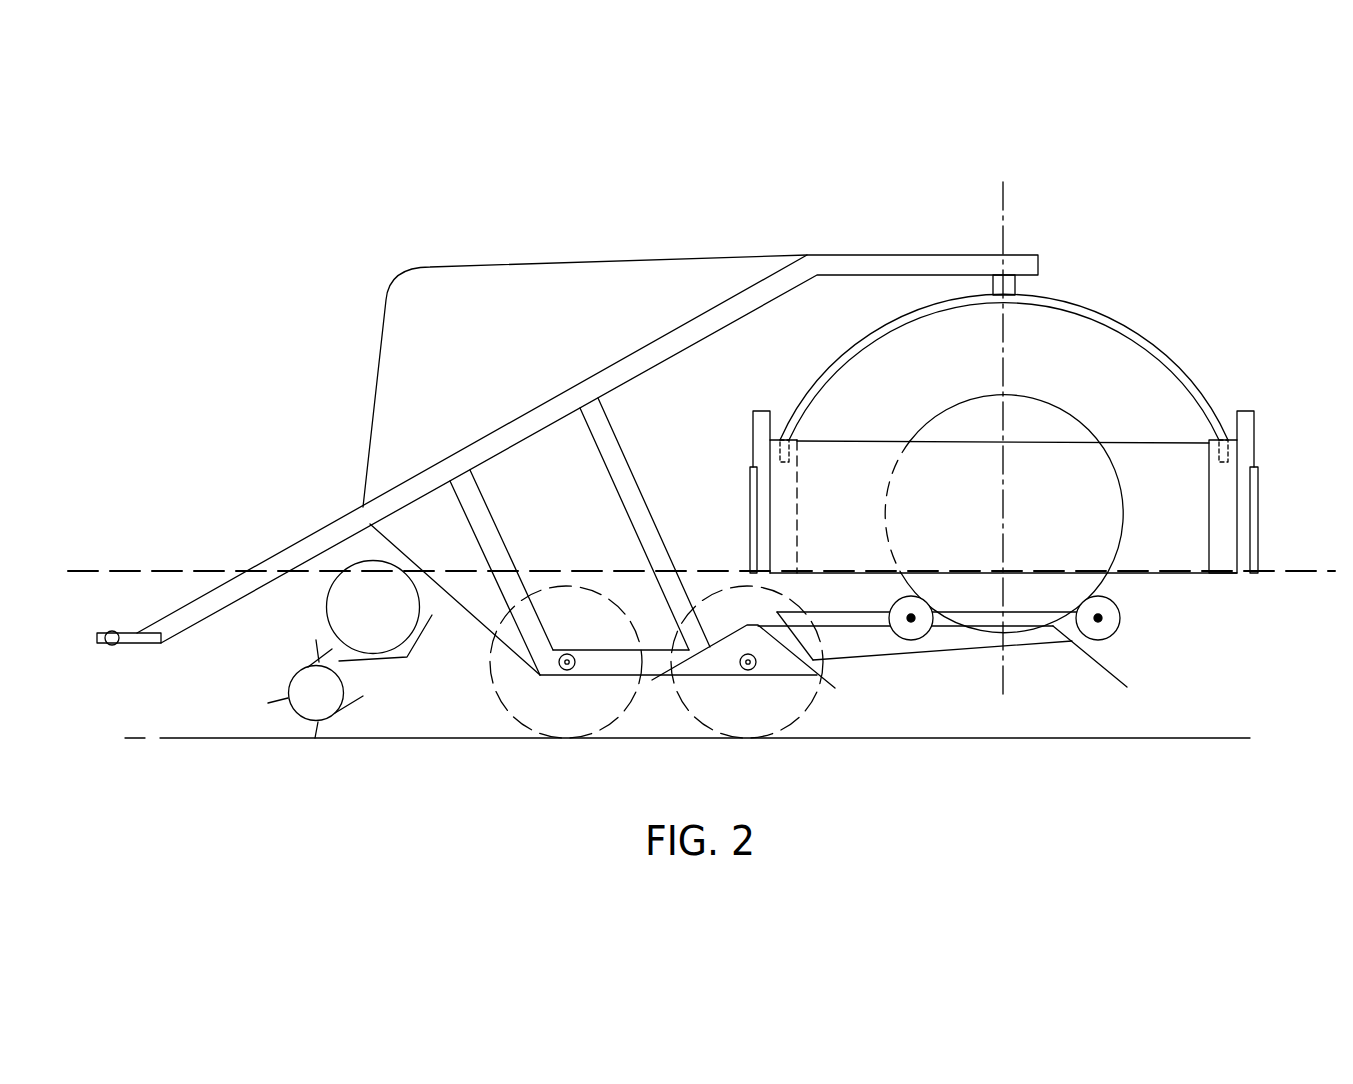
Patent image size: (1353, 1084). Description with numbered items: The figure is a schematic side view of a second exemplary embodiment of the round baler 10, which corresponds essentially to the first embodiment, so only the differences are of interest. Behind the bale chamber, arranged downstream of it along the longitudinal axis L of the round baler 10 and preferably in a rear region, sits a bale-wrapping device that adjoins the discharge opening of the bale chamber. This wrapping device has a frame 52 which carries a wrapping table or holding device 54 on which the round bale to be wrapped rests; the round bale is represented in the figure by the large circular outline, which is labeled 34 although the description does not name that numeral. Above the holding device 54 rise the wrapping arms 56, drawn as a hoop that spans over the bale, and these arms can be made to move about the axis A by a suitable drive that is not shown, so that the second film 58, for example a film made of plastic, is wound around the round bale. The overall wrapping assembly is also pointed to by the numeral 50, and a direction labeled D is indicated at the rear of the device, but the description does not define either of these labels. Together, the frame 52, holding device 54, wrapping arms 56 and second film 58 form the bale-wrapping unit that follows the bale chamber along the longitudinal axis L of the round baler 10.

The round baler 10 is at (532, 231).
The bale 34 is at (1063, 507).
The wrapping assembly 50 is at (1004, 389).
The frame 52 is at (907, 653).
The holding device 54 is at (984, 648).
The wrapping arms 56 is at (851, 346).
The second film 58 is at (1222, 530).
The axis A is at (1002, 211).
The direction D is at (1243, 545).
The longitudinal axis L is at (112, 568).